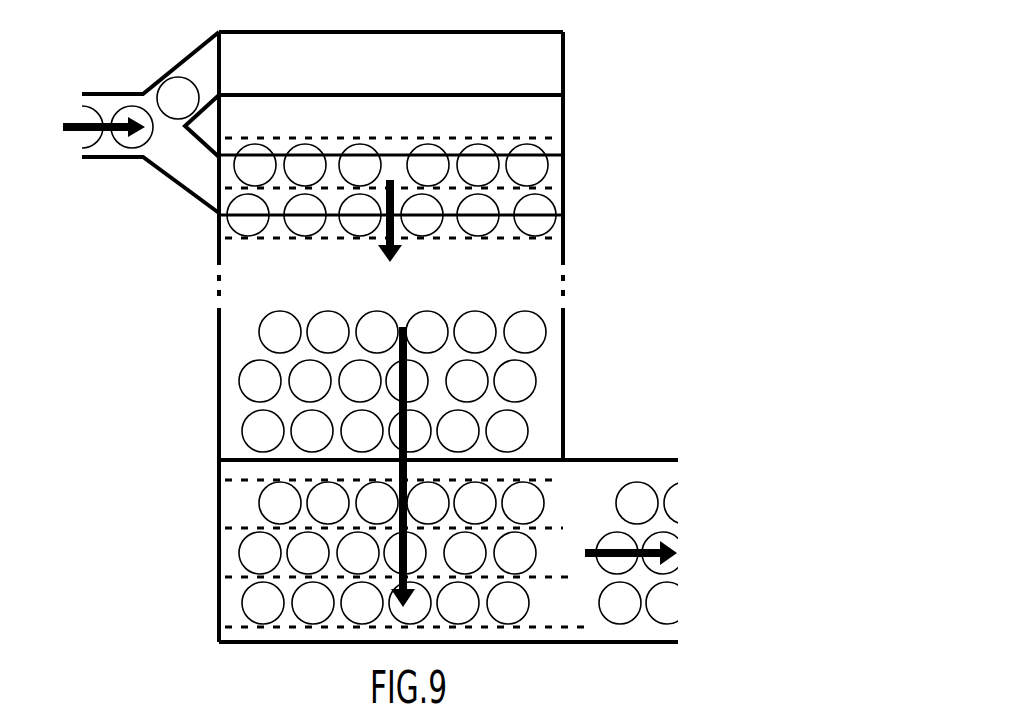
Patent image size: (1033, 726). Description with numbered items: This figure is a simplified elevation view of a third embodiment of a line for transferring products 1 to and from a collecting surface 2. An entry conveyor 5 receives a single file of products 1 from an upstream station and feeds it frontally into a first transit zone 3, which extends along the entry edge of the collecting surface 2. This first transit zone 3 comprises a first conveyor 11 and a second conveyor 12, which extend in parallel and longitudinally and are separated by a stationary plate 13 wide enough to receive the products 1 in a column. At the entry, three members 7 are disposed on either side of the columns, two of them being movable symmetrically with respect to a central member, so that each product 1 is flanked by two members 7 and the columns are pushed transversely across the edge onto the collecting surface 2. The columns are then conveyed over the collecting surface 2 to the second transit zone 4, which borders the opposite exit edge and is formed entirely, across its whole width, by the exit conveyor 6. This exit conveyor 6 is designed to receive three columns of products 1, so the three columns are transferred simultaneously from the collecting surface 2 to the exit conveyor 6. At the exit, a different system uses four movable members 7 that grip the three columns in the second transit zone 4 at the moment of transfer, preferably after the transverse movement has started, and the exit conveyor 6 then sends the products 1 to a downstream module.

The products 1 is at (252, 382).
The collecting surface 2 is at (575, 382).
The first transit zone 3 is at (583, 122).
The second transit zone 4 is at (209, 566).
The entry conveyor 5 is at (110, 91).
The exit conveyor 6 is at (234, 626).
The members 7 is at (501, 246).
The first conveyor 11 is at (550, 48).
The second conveyor 12 is at (558, 175).
The stationary plate 13 is at (548, 112).